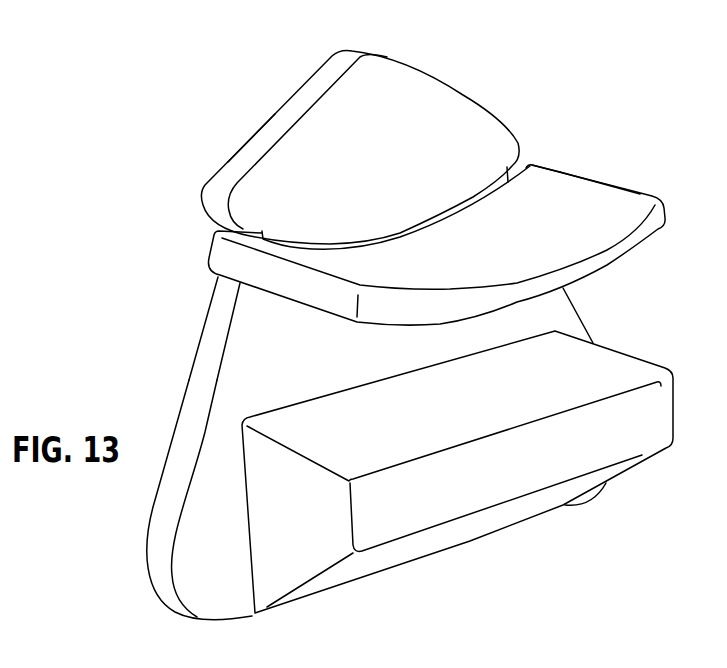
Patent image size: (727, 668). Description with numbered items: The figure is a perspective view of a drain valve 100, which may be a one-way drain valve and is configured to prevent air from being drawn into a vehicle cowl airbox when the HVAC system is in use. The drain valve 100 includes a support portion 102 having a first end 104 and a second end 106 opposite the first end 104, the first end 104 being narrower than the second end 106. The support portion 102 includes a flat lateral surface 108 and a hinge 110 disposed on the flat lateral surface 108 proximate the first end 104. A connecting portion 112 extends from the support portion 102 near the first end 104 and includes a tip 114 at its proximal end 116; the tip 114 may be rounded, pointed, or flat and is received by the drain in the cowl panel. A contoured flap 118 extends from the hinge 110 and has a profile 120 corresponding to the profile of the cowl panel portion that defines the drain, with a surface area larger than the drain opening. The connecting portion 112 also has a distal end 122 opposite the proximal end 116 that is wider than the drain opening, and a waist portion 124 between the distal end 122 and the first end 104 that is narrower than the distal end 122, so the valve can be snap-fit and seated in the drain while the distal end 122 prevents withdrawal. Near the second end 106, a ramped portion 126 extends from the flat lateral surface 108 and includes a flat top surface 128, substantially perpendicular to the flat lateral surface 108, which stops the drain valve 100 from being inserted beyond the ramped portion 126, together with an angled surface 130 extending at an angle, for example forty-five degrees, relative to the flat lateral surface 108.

The drain valve 100 is at (151, 115).
The support portion 102 is at (186, 376).
The first end 104 is at (216, 277).
The second end 106 is at (176, 474).
The flat lateral surface 108 is at (549, 319).
The hinge 110 is at (218, 230).
The connecting portion 112 is at (442, 62).
The tip 114 is at (327, 58).
The proximal end 116 is at (300, 80).
The contoured flap 118 is at (605, 174).
The profile 120 is at (542, 153).
The distal end 122 is at (250, 129).
The waist portion 124 is at (234, 223).
The ramped portion 126 is at (668, 366).
The top surface 128 is at (592, 366).
The angled surface 130 is at (379, 562).